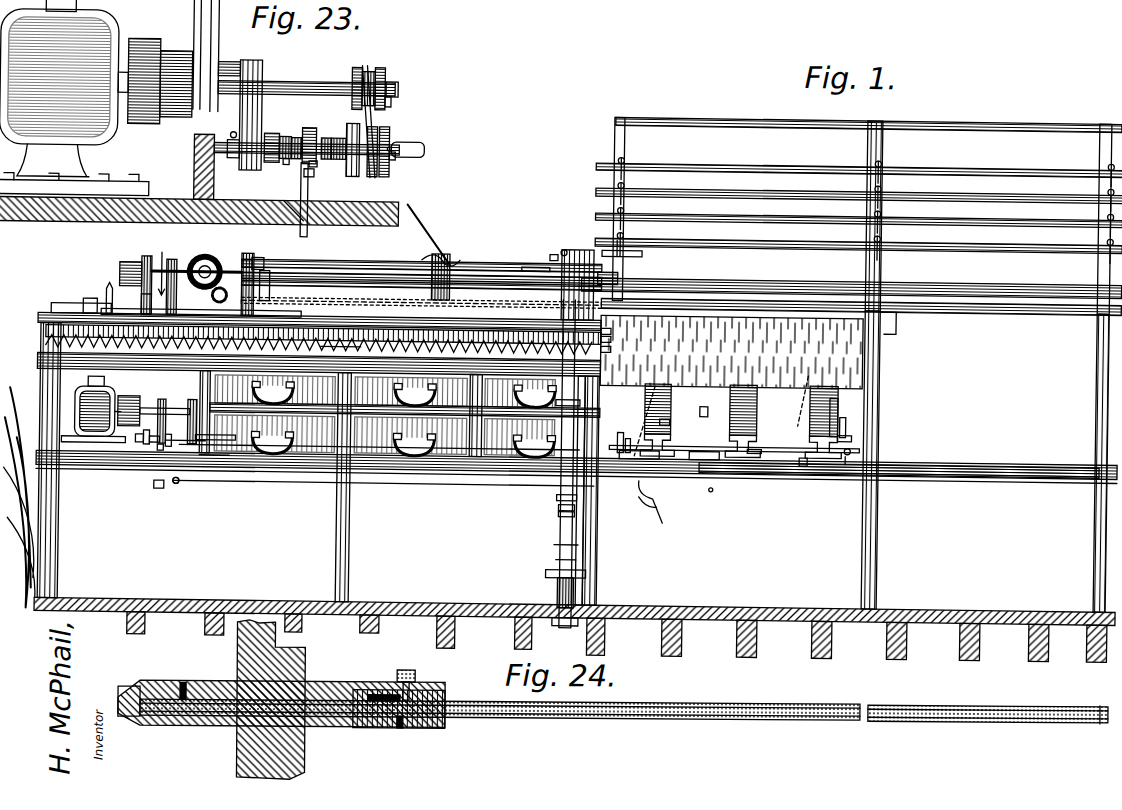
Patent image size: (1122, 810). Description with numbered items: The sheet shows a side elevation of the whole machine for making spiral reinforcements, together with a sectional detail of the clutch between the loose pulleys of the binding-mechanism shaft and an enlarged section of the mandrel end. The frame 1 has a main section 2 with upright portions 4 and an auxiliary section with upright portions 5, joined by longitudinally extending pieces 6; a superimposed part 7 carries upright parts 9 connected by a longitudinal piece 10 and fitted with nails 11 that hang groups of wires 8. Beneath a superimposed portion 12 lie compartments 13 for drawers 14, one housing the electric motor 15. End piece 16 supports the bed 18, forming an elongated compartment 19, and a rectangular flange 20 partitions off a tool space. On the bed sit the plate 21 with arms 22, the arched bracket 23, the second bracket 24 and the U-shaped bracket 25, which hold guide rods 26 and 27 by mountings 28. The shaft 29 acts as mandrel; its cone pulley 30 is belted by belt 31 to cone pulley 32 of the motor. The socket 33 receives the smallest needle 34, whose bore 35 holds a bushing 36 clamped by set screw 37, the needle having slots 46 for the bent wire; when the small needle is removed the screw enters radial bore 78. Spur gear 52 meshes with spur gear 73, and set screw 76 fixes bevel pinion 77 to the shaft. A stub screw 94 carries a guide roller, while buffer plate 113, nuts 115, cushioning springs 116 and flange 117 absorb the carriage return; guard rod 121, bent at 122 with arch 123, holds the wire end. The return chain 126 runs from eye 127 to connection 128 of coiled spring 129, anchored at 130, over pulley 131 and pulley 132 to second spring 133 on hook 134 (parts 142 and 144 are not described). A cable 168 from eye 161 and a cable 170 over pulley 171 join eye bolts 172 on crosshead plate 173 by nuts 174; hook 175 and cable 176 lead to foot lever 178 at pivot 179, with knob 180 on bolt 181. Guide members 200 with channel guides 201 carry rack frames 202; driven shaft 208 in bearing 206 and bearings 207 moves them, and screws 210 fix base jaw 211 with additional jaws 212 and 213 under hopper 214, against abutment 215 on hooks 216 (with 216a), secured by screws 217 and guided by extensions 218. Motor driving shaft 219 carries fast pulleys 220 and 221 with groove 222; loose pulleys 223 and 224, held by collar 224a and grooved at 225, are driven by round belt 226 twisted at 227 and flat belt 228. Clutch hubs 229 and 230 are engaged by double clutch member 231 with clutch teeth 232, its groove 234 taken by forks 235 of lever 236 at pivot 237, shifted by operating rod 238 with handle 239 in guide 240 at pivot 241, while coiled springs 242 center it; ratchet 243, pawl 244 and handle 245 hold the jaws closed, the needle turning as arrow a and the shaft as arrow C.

In FIG. 1, the frame 1 is at (350, 486).
In FIG. 1, the main section 2 is at (160, 457).
In FIG. 1, the upright portions 4 is at (60, 546).
In FIG. 1, the upright portions 5 is at (880, 567).
In FIG. 1, the longitudinally extending pieces 6 is at (780, 476).
In FIG. 1, the superimposed part 7 is at (888, 310).
In FIG. 1, the wires 8 is at (1008, 164).
In FIG. 1, the upright parts 9 is at (620, 136).
In FIG. 1, the longitudinal piece 10 is at (700, 117).
In FIG. 1, the supporting hangers or nails 11 is at (625, 162).
In FIG. 1, the superimposed portion 12 is at (38, 366).
In FIG. 1, the compartments 13 is at (990, 478).
In FIG. 1, the drawers 14 is at (416, 454).
In FIG. 23, the electric motor 15 is at (75, 98).
In FIG. 1, the electric motor 15 is at (72, 406).
In FIG. 1, the end piece 16 is at (48, 342).
In FIG. 1, the bed 18 is at (107, 304).
In FIG. 1, the elongated compartment 19 is at (160, 406).
In FIG. 1, the rectangular flange 20 is at (86, 304).
In FIG. 1, the plate 21 is at (633, 500).
In FIG. 1, the arms 22 is at (610, 350).
In FIG. 1, the arched bracket 23 is at (258, 275).
In FIG. 1, the second bracket 24 is at (150, 267).
In FIG. 1, the U-shaped bracket 25 is at (586, 249).
In FIG. 1, the guide rod 26 is at (397, 281).
In FIG. 1, the guide rod 27 is at (369, 280).
In FIG. 24, the mounting 28 is at (255, 653).
In FIG. 1, the mounting 28 is at (636, 262).
In FIG. 24, the shaft 29 is at (125, 683).
In FIG. 1, the shaft 29 is at (242, 272).
In FIG. 1, the cone pulley 30 is at (130, 268).
In FIG. 23, the belt 31 is at (206, 33).
In FIG. 1, the belt 31 is at (142, 304).
In FIG. 23, the cone pulley 32 is at (155, 81).
In FIG. 1, the cone pulley 32 is at (132, 405).
In FIG. 24, the socket 33 is at (213, 718).
In FIG. 24, the smallest needle 34 is at (495, 718).
In FIG. 24, the bore 35 is at (377, 695).
In FIG. 24, the bushing 36 is at (416, 733).
In FIG. 24, the set screw 37 is at (416, 668).
In FIG. 24, the slots 46 is at (1102, 719).
In FIG. 1, the spur gear 52 is at (255, 251).
In FIG. 1, the spur gear 73 is at (204, 265).
In FIG. 1, the set screw 76 is at (165, 275).
In FIG. 1, the bevel pinion 77 is at (201, 304).
In FIG. 24, the radial bore 78 is at (188, 686).
In FIG. 1, the stub screw 94 is at (430, 266).
In FIG. 1, the buffer plate 113 is at (528, 270).
In FIG. 1, the nuts 115 is at (648, 287).
In FIG. 1, the cushioning springs 116 is at (618, 276).
In FIG. 1, the flange 117 is at (560, 250).
In FIG. 1, the guard rod 121 is at (332, 280).
In FIG. 1, the bend 122 is at (306, 281).
In FIG. 1, the arch 123 is at (548, 255).
In FIG. 1, the chain 126 is at (480, 300).
In FIG. 1, the eye 127 is at (341, 338).
In FIG. 1, the connection 128 is at (429, 417).
In FIG. 1, the tensioned coiled spring 129 is at (520, 393).
In FIG. 1, the connection 130 is at (590, 378).
In FIG. 1, the pulley 131 is at (654, 413).
In FIG. 1, the pulley 132 is at (263, 395).
In FIG. 1, the second tensioned coiled spring 133 is at (272, 424).
In FIG. 1, the hook 134 is at (70, 344).
In FIG. 1, the bracket 142 is at (606, 340).
In FIG. 1, the bracket 144 is at (606, 332).
In FIG. 1, the eye 161 is at (590, 398).
In FIG. 1, the cable 168 is at (560, 503).
In FIG. 1, the cable 170 is at (534, 439).
In FIG. 1, the pulley 171 is at (505, 298).
In FIG. 1, the eye bolts 172 is at (562, 503).
In FIG. 1, the crosshead plate 173 is at (588, 517).
In FIG. 1, the nuts 174 is at (562, 529).
In FIG. 1, the hook 175 is at (558, 549).
In FIG. 1, the cable 176 is at (580, 572).
In FIG. 1, the foot lever 178 is at (578, 628).
In FIG. 1, the pivot 179 is at (610, 626).
In FIG. 1, the foot-engaging knob 180 is at (580, 594).
In FIG. 1, the bolt 181 is at (556, 575).
In FIG. 1, the guide members 200 is at (826, 458).
In FIG. 1, the channel guides 201 is at (744, 466).
In FIG. 1, the rack frames 202 is at (848, 435).
In FIG. 1, the bearing 206 is at (145, 452).
In FIG. 1, the bearings 207 is at (656, 463).
In FIG. 23, the driven shaft 208 is at (410, 146).
In FIG. 1, the driven shaft 208 is at (776, 445).
In FIG. 1, the screws 210 is at (718, 463).
In FIG. 1, the base jaw 211 is at (882, 376).
In FIG. 1, the additional jaw 212 is at (755, 403).
In FIG. 1, the additional jaw 213 is at (840, 410).
In FIG. 1, the hopper 214 is at (806, 393).
In FIG. 1, the abutment 215 is at (845, 418).
In FIG. 1, the hooks 216 is at (848, 446).
In FIG. 1, the pin 216a is at (852, 457).
In FIG. 1, the screws 217 is at (918, 430).
In FIG. 1, the extensions 218 is at (767, 444).
In FIG. 23, the driving shaft 219 is at (330, 82).
In FIG. 1, the driving shaft 219 is at (160, 416).
In FIG. 23, the fast pulley 220 is at (256, 80).
In FIG. 1, the fast pulley 220 is at (140, 448).
In FIG. 23, the fast pulley 221 is at (383, 75).
In FIG. 23, the groove 222 is at (398, 83).
In FIG. 23, the loose pulley 223 is at (232, 178).
In FIG. 23, the loose pulley 224 is at (385, 130).
In FIG. 23, the collar 224a is at (396, 158).
In FIG. 23, the groove 225 is at (368, 174).
In FIG. 23, the round belt 226 is at (362, 68).
In FIG. 1, the round belt 226 is at (190, 416).
In FIG. 23, the twist 227 is at (378, 103).
In FIG. 23, the flat belt 228 is at (255, 64).
In FIG. 1, the flat belt 228 is at (140, 448).
In FIG. 23, the clutch hub 229 is at (268, 134).
In FIG. 1, the clutch hub 229 is at (160, 505).
In FIG. 23, the clutch hub 230 is at (345, 143).
In FIG. 1, the clutch hub 230 is at (203, 442).
In FIG. 23, the double clutch member 231 is at (316, 137).
In FIG. 1, the double clutch member 231 is at (200, 422).
In FIG. 23, the clutch teeth 232 is at (282, 162).
In FIG. 23, the groove 234 is at (295, 134).
In FIG. 23, the forks 235 is at (313, 178).
In FIG. 23, the lever 236 is at (310, 197).
In FIG. 1, the lever 236 is at (214, 463).
In FIG. 23, the pivot 237 is at (285, 202).
In FIG. 23, the operating rod 238 is at (314, 166).
In FIG. 1, the operating rod 238 is at (262, 502).
In FIG. 1, the handle 239 is at (665, 508).
In FIG. 1, the guide 240 is at (663, 523).
In FIG. 1, the pivot 241 is at (180, 486).
In FIG. 23, the coiled springs 242 is at (325, 134).
In FIG. 1, the ratchet 243 is at (666, 420).
In FIG. 1, the pawl 244 is at (634, 463).
In FIG. 1, the handle 245 is at (632, 463).
In FIG. 23, the arrow a is at (230, 122).
In FIG. 1, the arrow C is at (708, 497).